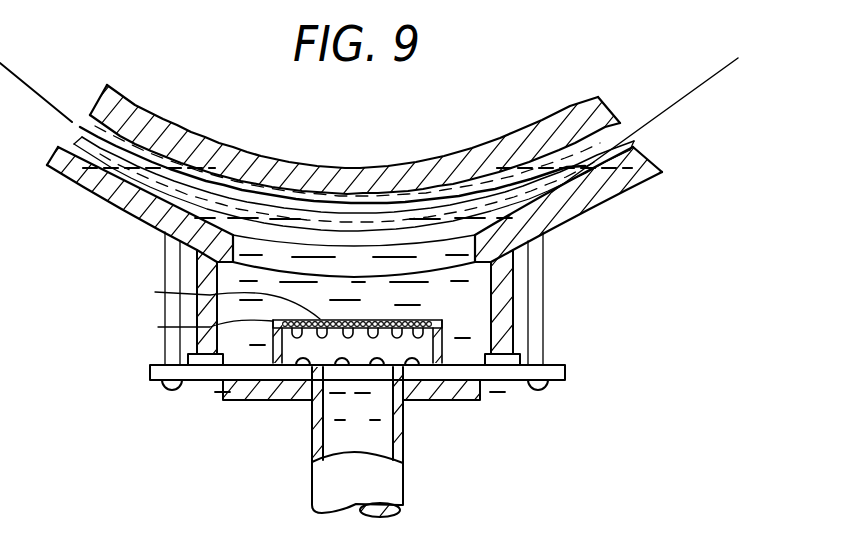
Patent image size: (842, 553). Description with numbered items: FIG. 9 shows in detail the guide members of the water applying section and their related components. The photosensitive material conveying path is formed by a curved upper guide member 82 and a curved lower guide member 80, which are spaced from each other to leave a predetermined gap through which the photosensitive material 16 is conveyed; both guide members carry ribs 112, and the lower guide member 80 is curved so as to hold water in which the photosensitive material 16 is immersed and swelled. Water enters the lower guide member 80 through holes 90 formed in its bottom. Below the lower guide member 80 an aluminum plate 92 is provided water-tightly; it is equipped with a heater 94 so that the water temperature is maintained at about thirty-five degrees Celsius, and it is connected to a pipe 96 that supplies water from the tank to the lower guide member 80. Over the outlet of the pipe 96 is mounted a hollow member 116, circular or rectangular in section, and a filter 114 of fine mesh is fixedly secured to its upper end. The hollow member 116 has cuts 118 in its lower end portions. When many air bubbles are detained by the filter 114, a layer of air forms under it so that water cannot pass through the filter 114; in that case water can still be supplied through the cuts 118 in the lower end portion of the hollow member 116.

The photosensitive material 16 is at (695, 93).
The lower guide member 80 is at (606, 210).
The upper guide member 82 is at (560, 120).
The holes 90 is at (447, 260).
The aluminum plate 92 is at (566, 372).
The heater 94 is at (431, 406).
The pipe 96 is at (392, 492).
The ribs 112 is at (637, 146).
The filter 114 is at (219, 297).
The hollow member 116 is at (196, 328).
The cuts 118 is at (303, 402).